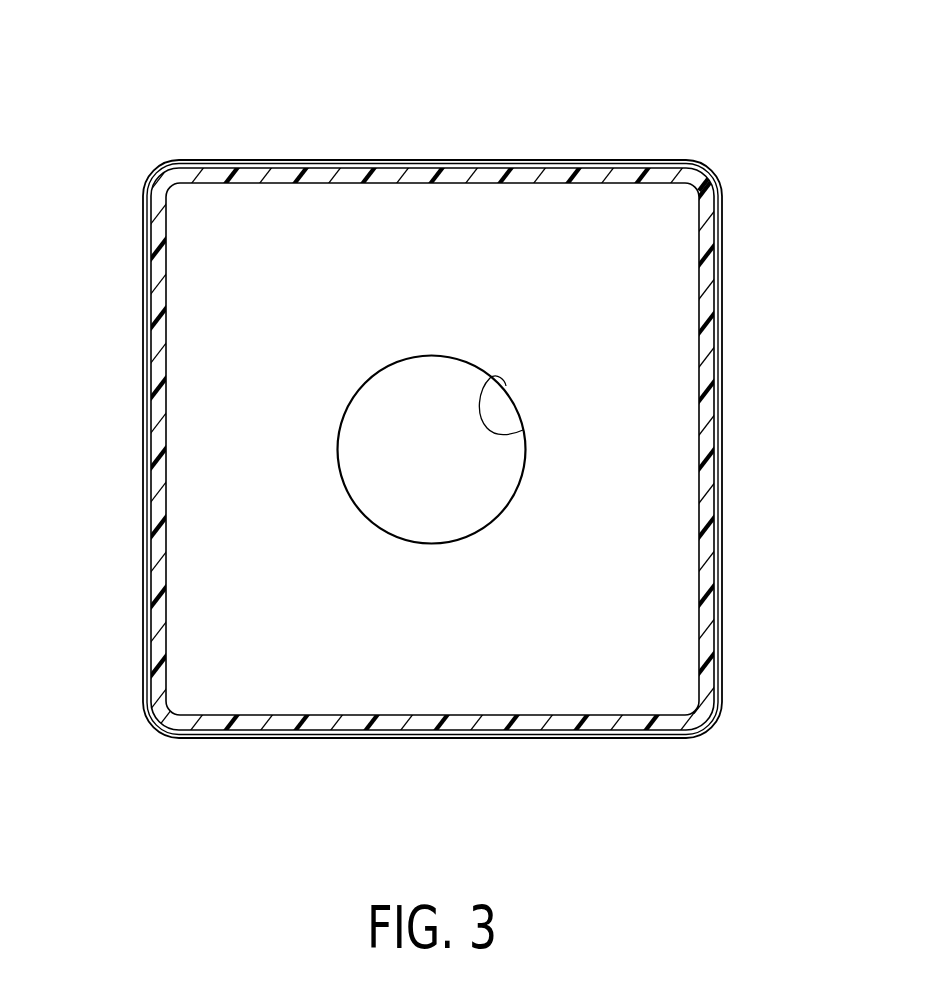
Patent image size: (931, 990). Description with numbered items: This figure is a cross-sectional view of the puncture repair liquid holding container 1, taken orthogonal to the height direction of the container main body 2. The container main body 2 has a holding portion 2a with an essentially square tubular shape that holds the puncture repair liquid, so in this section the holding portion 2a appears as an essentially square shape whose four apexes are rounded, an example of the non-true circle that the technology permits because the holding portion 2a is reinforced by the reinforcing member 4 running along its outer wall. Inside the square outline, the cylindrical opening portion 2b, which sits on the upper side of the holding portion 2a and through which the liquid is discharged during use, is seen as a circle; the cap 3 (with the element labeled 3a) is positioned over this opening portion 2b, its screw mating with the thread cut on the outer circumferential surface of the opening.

The puncture repair liquid holding container 1 is at (433, 370).
The container main body 2 is at (145, 275).
The holding portion 2a is at (703, 618).
The opening portion 2b is at (523, 430).
The cap 3 is at (432, 596).
The through hole 3a is at (432, 450).
The reinforcing member 4 is at (147, 480).